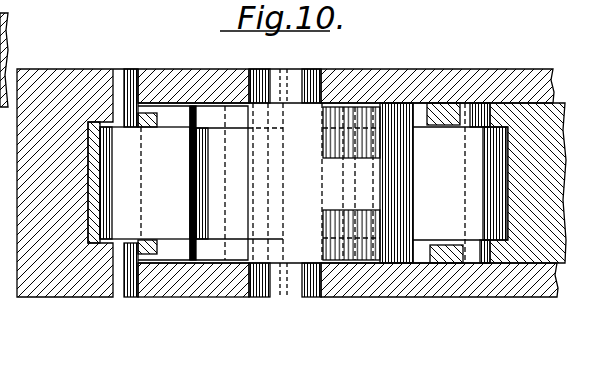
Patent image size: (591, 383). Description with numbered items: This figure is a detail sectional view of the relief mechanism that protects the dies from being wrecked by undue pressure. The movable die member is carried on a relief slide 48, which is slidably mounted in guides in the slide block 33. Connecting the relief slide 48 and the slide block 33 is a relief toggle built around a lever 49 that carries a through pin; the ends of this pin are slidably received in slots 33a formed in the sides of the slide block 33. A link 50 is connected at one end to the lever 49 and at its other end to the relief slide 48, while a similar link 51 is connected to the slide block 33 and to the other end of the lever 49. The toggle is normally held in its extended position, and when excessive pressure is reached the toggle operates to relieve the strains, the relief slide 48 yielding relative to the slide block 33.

The slide block 33 is at (183, 74).
The slots 33a is at (272, 80).
The relief slide 48 is at (547, 242).
The lever 49 is at (232, 183).
The link 50 is at (415, 183).
The link 51 is at (145, 183).